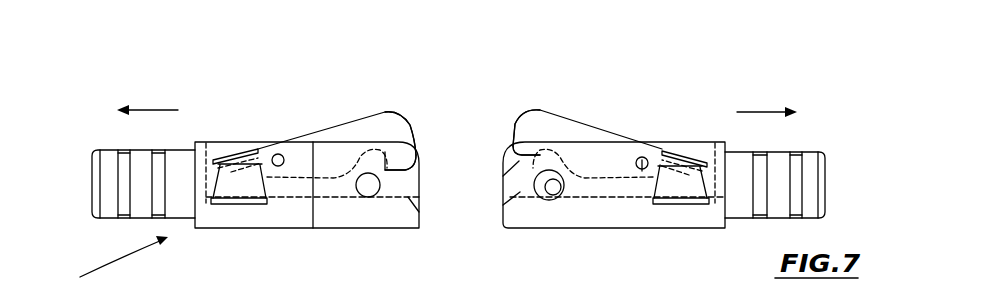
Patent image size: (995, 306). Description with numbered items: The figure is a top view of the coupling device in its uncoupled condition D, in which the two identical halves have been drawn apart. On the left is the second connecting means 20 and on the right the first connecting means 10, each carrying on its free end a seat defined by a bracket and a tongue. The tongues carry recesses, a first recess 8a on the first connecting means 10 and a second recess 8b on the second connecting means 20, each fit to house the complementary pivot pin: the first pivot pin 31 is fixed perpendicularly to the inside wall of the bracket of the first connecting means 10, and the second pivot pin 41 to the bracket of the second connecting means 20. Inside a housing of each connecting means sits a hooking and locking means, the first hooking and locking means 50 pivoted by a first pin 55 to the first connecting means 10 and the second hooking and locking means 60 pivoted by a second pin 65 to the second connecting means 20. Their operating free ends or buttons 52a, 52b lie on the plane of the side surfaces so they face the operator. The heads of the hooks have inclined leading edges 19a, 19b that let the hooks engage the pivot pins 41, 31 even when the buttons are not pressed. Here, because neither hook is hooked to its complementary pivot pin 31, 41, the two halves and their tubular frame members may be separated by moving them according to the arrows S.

The first connecting means 10 is at (820, 119).
The second connecting means 20 is at (98, 119).
The first hooking and locking means 50 is at (608, 123).
The second hooking and locking means 60 is at (318, 122).
The first inclined leading edge 19a is at (515, 155).
The second inclined leading edge 19b is at (413, 145).
The first recess 8a is at (518, 187).
The second recess 8b is at (388, 167).
The first operating free end 52a is at (663, 148).
The second operating free end 52b is at (235, 145).
The first pivot pin 31 is at (557, 190).
The second pivot pin 41 is at (368, 190).
The first pin 55 is at (640, 168).
The second pin 65 is at (281, 163).
The arrows S is at (457, 99).
The uncoupling condition D is at (110, 265).